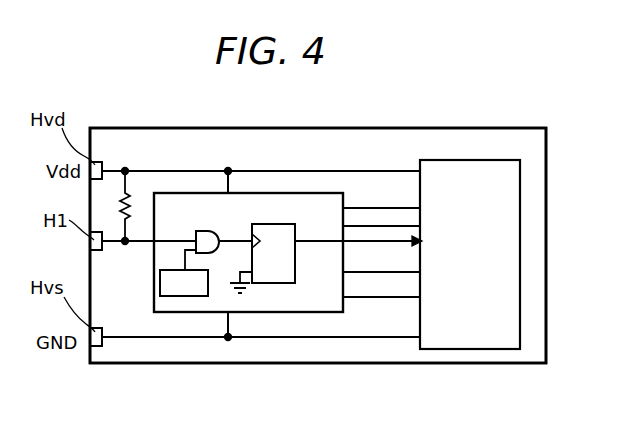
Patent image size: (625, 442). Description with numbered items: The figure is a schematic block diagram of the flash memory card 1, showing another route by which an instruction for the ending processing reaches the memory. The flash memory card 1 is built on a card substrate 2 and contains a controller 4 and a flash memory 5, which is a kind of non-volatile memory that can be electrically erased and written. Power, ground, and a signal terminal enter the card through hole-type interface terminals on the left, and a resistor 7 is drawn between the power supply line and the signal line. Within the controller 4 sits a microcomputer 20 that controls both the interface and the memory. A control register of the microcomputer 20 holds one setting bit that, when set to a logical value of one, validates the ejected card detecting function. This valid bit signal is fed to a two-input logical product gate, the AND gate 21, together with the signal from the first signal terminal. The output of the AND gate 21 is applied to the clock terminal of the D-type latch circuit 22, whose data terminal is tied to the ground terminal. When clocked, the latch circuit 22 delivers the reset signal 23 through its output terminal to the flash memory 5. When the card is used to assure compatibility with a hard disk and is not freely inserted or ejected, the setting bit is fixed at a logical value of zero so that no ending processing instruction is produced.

The flash memory card 1 is at (516, 127).
The card substrate 2 is at (540, 283).
The controller 4 is at (298, 303).
The flash memory 5 is at (487, 342).
The resistor 7 is at (136, 200).
The microcomputer 20 is at (177, 290).
The 2-input logical product (AND) gate 21 is at (212, 235).
The D-type latch circuit 22 is at (297, 229).
The reset signal 23 is at (368, 255).